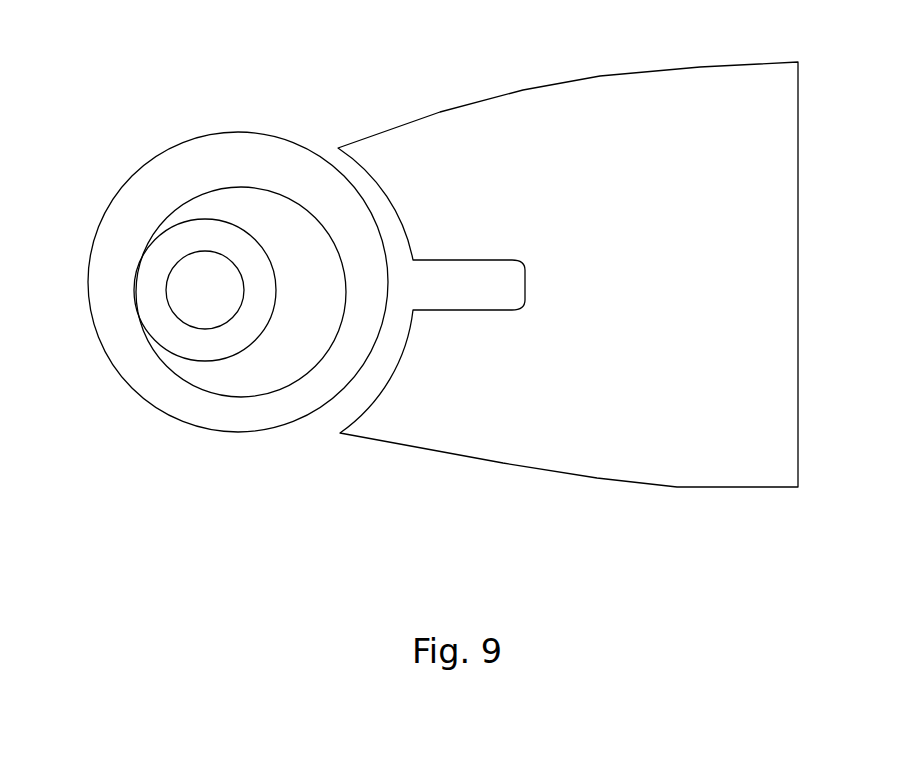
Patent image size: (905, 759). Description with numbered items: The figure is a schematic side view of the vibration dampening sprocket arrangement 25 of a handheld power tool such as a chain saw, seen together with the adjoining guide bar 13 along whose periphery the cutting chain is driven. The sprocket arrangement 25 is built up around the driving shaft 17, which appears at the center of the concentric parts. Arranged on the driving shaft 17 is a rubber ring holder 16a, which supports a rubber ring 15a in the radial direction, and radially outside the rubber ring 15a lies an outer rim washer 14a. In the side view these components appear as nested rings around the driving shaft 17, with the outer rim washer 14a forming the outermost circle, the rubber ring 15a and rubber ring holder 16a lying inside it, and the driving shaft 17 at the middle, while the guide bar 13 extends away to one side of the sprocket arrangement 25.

The guide bar 13 is at (487, 453).
The outer rim washer 14a is at (235, 150).
The rubber ring 15a is at (222, 378).
The rubber ring holder 16a is at (197, 233).
The driving shaft 17 is at (192, 283).
The sprocket arrangement 25 is at (215, 305).